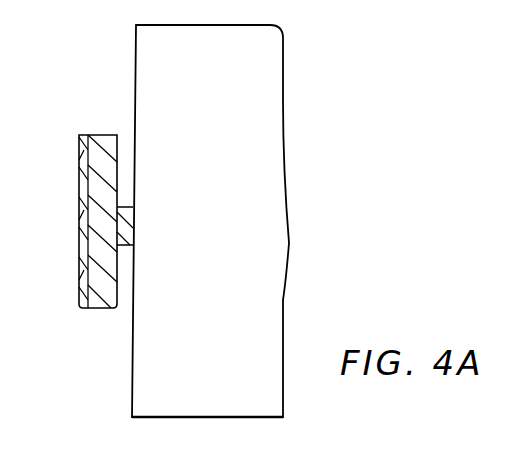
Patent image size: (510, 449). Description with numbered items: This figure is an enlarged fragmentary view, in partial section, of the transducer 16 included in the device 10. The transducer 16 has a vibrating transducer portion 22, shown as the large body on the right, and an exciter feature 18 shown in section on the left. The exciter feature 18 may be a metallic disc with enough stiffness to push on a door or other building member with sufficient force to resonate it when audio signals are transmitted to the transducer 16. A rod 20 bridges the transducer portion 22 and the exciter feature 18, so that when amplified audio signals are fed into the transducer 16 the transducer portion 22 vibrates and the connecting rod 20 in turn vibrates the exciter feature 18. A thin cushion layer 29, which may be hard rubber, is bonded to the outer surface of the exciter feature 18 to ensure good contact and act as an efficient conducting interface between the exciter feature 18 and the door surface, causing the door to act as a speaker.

The device 10 is at (255, 221).
The transducer portion 22 is at (273, 90).
The transducer 16 is at (74, 235).
The exciter feature 18 is at (84, 185).
The cushion layer 29 is at (74, 140).
The rod 20 is at (124, 247).